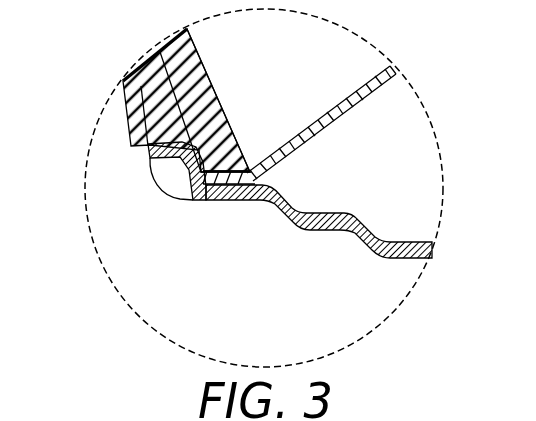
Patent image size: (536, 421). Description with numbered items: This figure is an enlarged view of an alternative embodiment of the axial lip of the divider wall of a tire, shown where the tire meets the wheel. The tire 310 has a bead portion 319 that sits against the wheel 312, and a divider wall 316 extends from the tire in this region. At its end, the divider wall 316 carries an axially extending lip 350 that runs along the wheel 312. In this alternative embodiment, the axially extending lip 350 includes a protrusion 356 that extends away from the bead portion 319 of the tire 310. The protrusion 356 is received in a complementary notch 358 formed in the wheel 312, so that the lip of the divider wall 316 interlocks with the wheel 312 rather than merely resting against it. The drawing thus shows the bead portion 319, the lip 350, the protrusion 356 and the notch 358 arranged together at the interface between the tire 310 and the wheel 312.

The tire 310 is at (142, 65).
The wheel 312 is at (402, 258).
The divider wall 316 is at (392, 64).
The bead portion 319 is at (224, 126).
The axially extending lip 350 is at (185, 198).
The protrusion 356 is at (218, 179).
The notch 358 is at (209, 185).